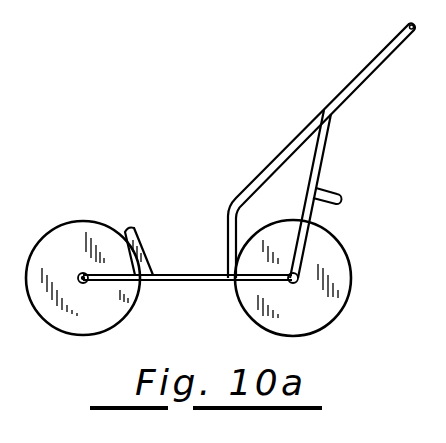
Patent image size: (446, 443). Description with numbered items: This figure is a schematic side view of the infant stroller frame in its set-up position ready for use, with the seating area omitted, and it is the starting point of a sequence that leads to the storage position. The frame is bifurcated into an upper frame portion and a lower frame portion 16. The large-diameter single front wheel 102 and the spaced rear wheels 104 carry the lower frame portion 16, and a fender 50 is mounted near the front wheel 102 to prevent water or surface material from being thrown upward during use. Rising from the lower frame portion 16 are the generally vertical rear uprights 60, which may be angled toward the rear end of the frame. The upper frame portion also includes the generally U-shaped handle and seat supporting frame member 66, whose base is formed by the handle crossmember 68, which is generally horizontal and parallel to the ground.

The front wheel 102 is at (82, 238).
The rear wheel 104 is at (320, 303).
The lower frame portion 16 is at (205, 282).
The fender 50 is at (137, 247).
The handle and seat supporting frame member 66 is at (297, 137).
The rear upright 60 is at (318, 165).
The handle crossmember 68 is at (410, 26).